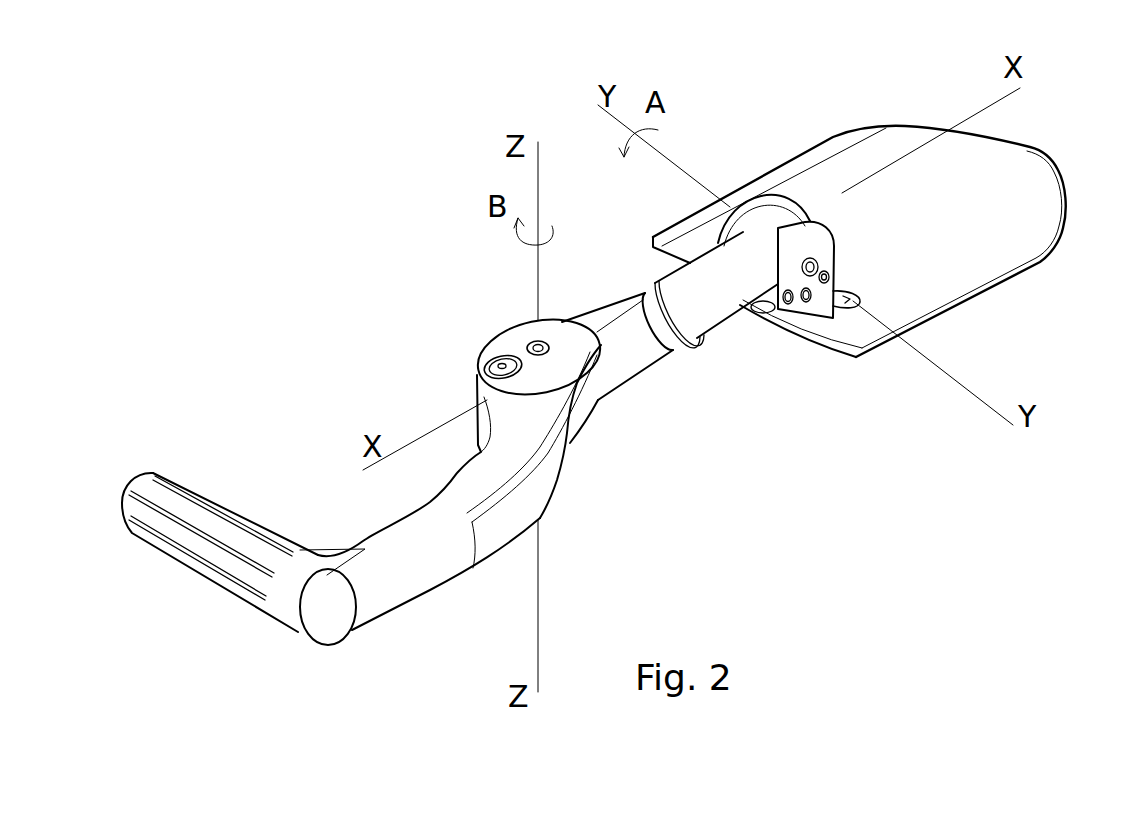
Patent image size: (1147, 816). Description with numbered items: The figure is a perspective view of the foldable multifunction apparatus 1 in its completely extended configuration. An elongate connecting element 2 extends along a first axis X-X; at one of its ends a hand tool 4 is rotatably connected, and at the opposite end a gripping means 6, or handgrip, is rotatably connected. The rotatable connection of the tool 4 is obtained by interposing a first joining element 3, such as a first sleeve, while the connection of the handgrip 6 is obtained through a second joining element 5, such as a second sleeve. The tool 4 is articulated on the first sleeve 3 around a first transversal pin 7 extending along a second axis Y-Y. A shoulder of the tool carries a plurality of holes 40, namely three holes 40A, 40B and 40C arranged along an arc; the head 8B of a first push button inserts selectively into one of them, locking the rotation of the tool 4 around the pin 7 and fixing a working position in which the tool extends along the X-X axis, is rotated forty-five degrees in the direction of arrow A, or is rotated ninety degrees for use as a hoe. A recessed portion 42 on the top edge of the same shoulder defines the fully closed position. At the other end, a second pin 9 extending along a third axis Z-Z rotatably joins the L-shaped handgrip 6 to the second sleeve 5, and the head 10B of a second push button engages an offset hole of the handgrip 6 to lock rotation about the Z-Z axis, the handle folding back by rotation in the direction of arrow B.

The foldable multifunction apparatus 1 is at (359, 190).
The elongate connecting element 2 is at (663, 298).
The first joining element 3 is at (710, 270).
The hand tool 4 is at (1050, 207).
The second joining element 5 is at (637, 342).
The gripping means 6 is at (383, 537).
The first transversal pin 7 is at (811, 260).
The head of the first push button 8B is at (836, 278).
The second pin 9 is at (520, 340).
The head of the second push button 10B is at (487, 360).
The plurality of holes 40 is at (811, 326).
The first hole 40A is at (827, 273).
The second hole 40B is at (838, 330).
The third hole 40C is at (790, 315).
The recessed portion 42 is at (782, 245).